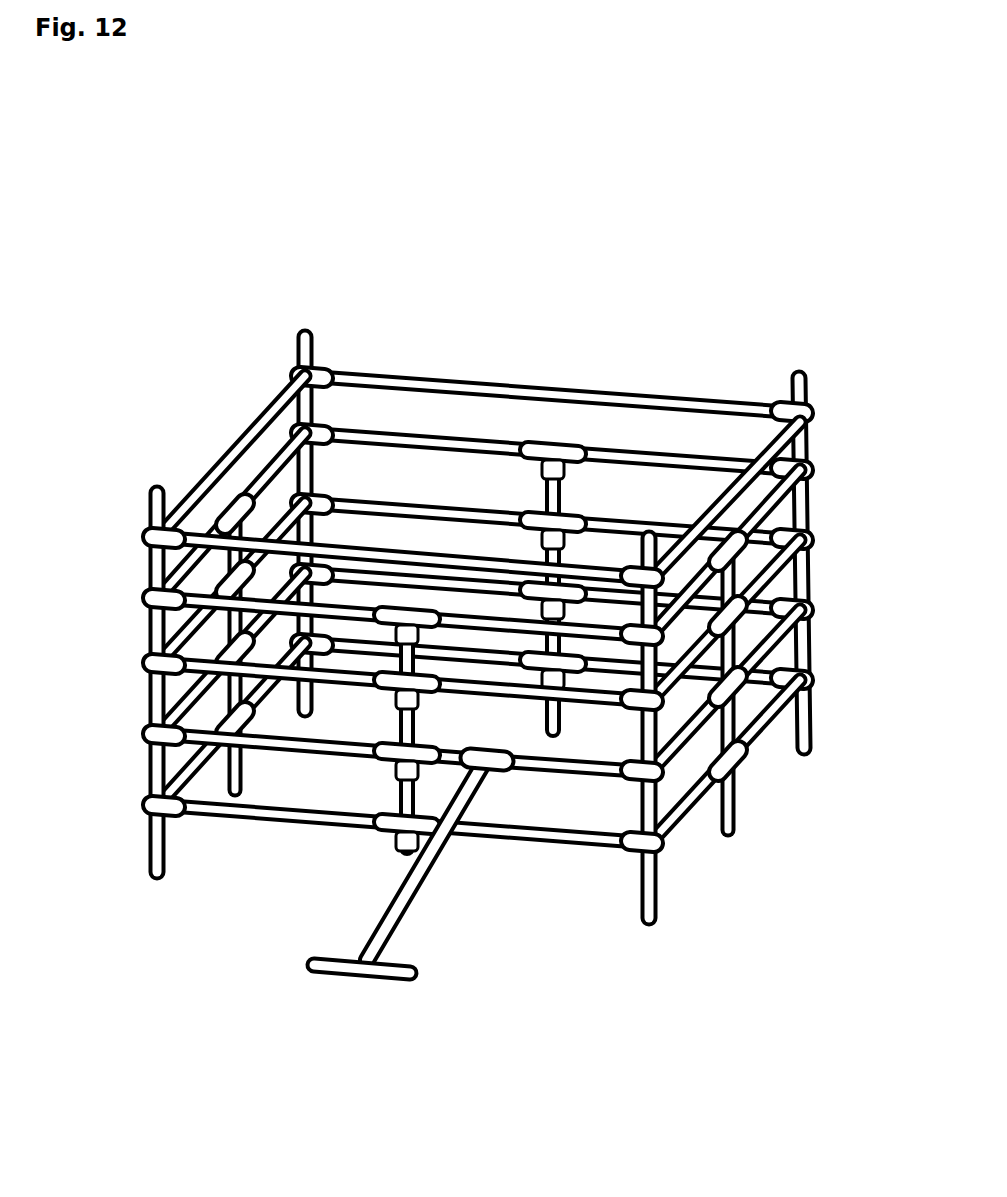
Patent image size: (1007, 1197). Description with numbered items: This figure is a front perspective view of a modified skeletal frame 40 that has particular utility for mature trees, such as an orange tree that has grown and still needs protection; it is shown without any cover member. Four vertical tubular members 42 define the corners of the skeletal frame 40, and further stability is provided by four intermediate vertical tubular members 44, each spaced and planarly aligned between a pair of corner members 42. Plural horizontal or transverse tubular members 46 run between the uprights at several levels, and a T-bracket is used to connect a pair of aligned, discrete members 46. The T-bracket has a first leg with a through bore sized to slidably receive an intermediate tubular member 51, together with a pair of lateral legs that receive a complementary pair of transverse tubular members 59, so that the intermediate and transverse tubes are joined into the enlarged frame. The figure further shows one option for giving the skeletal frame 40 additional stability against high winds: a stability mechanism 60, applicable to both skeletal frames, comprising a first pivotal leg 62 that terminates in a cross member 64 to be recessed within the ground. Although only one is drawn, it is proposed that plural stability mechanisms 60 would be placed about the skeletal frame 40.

The skeletal frame 40 is at (494, 622).
The vertical tubular member 42 is at (661, 742).
The intermediate vertical tubular member 44 is at (565, 468).
The horizontal or transverse tubular member 46 is at (240, 798).
The intermediate tubular member 51 is at (478, 770).
The transverse tubular member 59 is at (583, 700).
The stability mechanism 60 is at (417, 899).
The first pivotal leg 62 is at (445, 852).
The cross member 64 is at (386, 981).